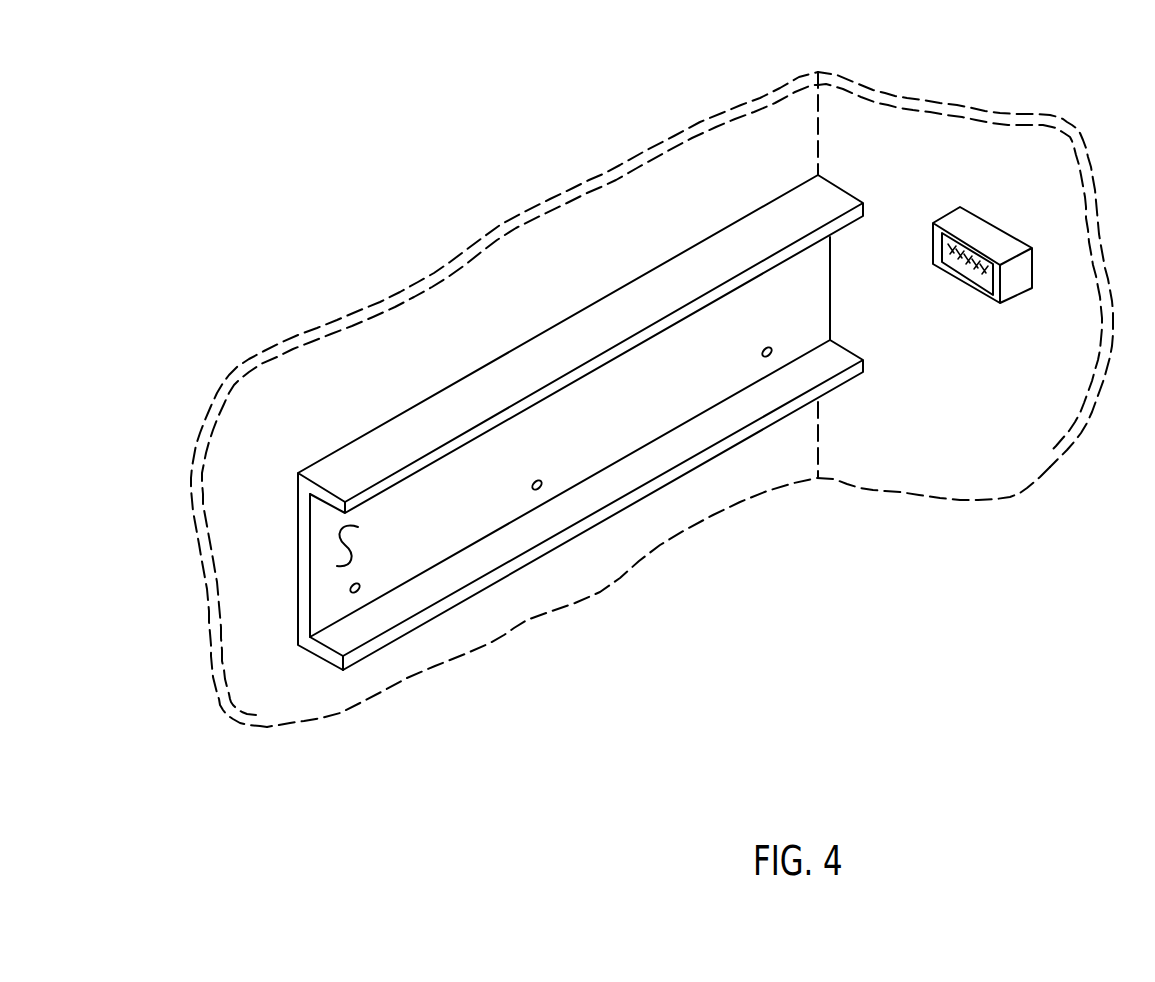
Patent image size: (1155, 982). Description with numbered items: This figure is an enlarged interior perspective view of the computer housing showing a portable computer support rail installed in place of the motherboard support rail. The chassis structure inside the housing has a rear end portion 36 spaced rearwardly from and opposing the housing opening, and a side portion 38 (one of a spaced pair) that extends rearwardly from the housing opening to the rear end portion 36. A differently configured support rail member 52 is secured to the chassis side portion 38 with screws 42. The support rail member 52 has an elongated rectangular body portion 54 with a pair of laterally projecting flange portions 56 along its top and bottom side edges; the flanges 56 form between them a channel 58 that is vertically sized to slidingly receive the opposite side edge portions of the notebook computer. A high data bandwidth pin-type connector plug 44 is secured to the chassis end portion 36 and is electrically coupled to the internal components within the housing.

The rear end portion 36 is at (902, 102).
The side portion 38 is at (621, 172).
The screws 42 is at (353, 597).
The pin-type connector plug 44 is at (978, 233).
The support rail member 52 is at (432, 398).
The rectangular body portion 54 is at (656, 396).
The flange portions 56 is at (414, 464).
The channel 58 is at (342, 548).